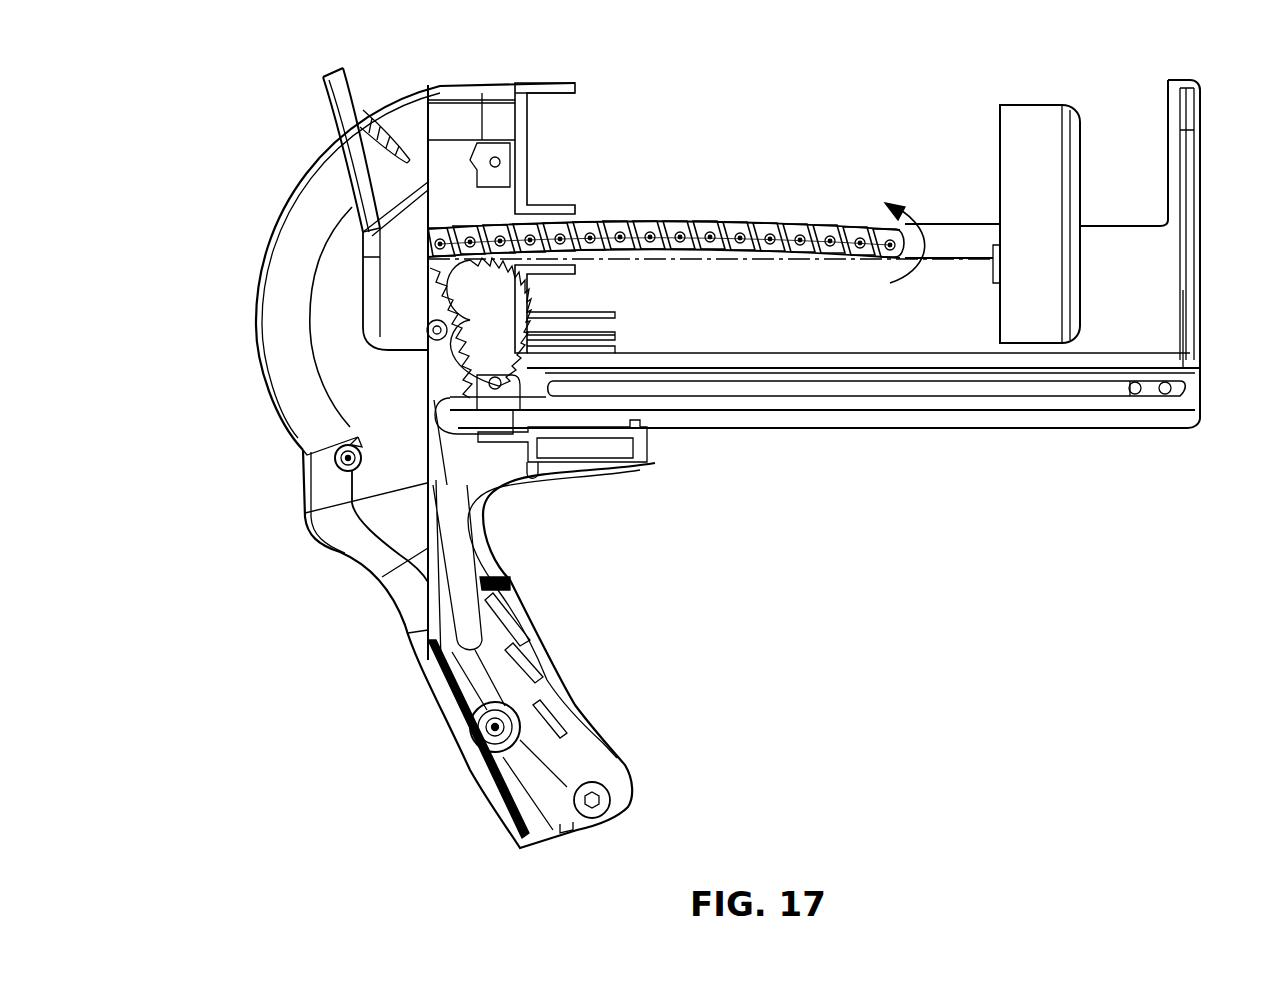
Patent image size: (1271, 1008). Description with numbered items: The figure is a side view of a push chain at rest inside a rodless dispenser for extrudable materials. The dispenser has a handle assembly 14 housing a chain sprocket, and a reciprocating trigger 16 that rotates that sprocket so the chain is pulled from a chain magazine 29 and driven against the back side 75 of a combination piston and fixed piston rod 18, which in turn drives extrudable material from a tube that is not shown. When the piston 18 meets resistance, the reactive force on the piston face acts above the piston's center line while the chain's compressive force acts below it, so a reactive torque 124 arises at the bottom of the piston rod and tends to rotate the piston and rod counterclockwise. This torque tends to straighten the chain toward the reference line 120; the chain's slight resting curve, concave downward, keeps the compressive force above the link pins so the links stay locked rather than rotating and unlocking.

The handle assembly 14 is at (205, 870).
The reciprocating trigger 16 is at (527, 606).
The combination piston and fixed piston rod 18 is at (1028, 105).
The chain magazine 29 is at (1112, 430).
The back side 75 is at (1000, 197).
The reference line 120 is at (712, 262).
The reactive torque 124 is at (892, 283).